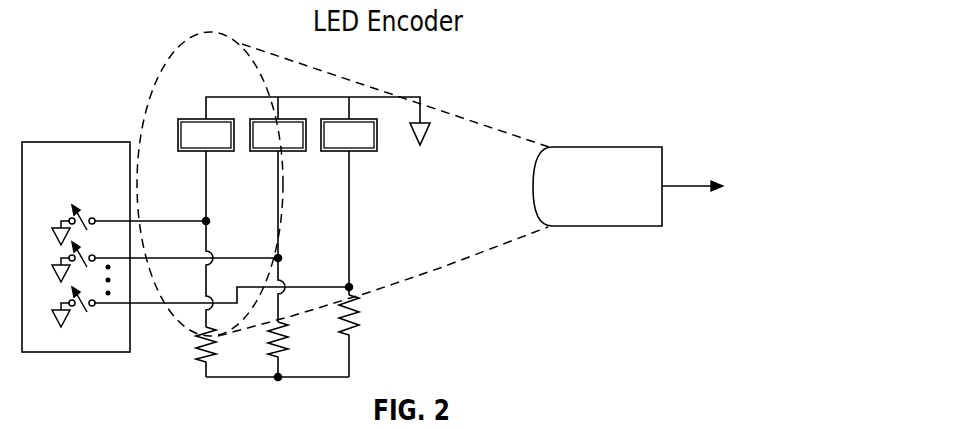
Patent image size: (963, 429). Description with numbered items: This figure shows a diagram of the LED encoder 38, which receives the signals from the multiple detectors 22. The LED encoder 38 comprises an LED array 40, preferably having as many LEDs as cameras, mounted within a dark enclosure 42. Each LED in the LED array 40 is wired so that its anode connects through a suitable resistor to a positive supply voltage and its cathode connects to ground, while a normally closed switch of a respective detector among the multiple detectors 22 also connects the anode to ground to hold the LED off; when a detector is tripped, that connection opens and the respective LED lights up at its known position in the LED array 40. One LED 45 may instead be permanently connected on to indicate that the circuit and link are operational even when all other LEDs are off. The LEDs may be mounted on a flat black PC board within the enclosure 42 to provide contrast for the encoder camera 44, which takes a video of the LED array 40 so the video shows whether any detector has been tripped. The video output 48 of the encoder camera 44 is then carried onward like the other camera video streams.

The multiple detectors 22 is at (76, 142).
The LED encoder 38 is at (518, 93).
The LED array 40 is at (195, 152).
The dark enclosure 42 is at (444, 270).
The encoder camera 44 is at (610, 147).
The LED 45 is at (358, 152).
The video output 48 is at (688, 187).